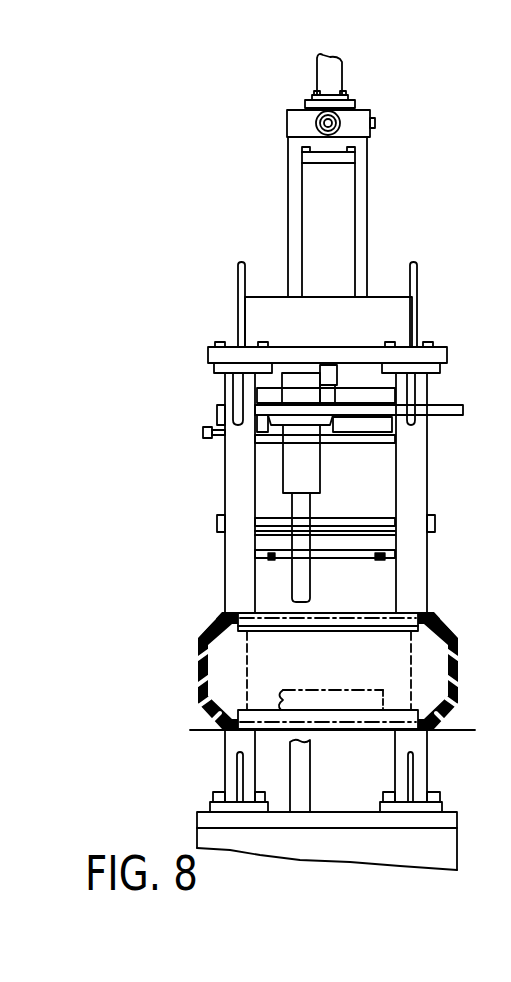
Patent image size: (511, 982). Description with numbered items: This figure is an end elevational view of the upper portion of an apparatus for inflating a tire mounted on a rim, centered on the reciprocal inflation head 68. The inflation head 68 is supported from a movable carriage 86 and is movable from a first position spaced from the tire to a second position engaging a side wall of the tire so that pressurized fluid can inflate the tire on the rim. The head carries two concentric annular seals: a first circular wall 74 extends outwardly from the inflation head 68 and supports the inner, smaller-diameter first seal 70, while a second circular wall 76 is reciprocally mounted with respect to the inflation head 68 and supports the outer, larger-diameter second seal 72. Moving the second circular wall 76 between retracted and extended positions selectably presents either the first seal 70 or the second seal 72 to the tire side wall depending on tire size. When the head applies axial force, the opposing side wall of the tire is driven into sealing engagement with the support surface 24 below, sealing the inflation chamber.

The support surface 24 is at (348, 723).
The reciprocal inflation head 68 is at (203, 408).
The first seal 70 is at (285, 556).
The second seal 72 is at (258, 560).
The first circular wall 74 is at (357, 560).
The second circular wall 76 is at (378, 558).
The movable carriage 86 is at (445, 370).